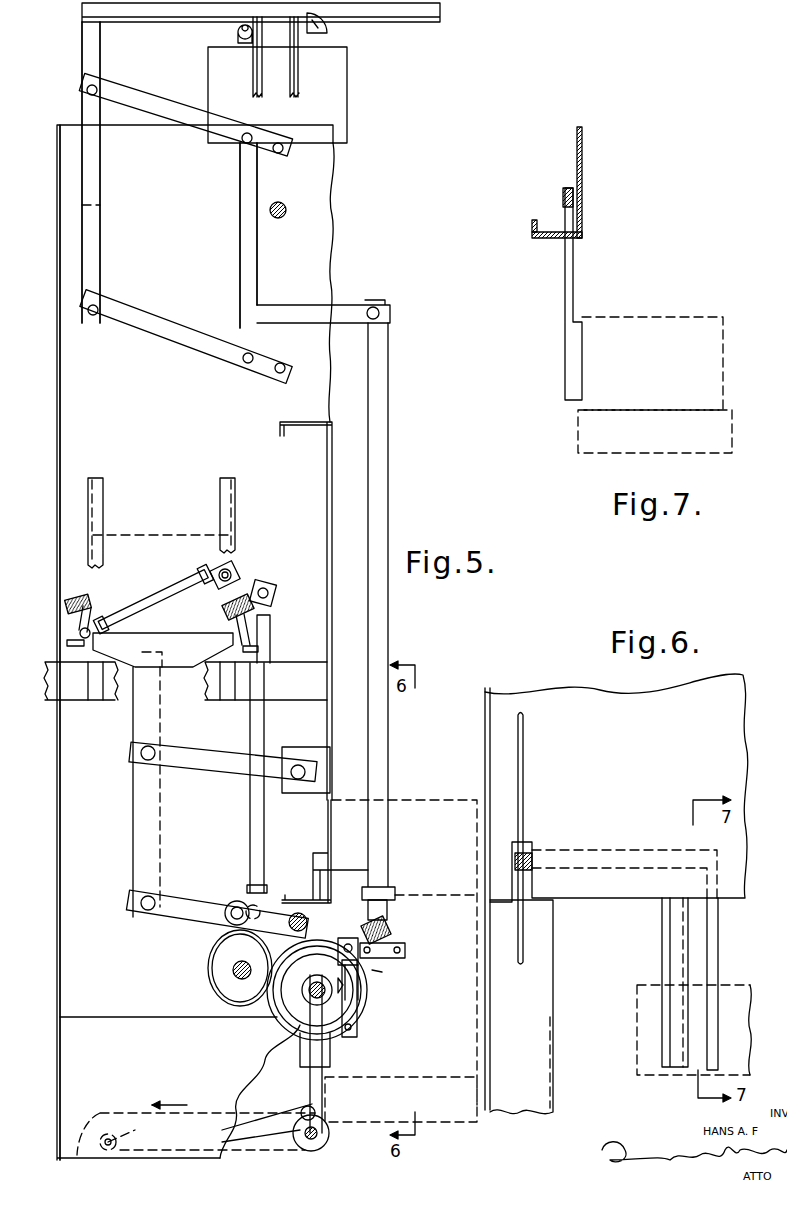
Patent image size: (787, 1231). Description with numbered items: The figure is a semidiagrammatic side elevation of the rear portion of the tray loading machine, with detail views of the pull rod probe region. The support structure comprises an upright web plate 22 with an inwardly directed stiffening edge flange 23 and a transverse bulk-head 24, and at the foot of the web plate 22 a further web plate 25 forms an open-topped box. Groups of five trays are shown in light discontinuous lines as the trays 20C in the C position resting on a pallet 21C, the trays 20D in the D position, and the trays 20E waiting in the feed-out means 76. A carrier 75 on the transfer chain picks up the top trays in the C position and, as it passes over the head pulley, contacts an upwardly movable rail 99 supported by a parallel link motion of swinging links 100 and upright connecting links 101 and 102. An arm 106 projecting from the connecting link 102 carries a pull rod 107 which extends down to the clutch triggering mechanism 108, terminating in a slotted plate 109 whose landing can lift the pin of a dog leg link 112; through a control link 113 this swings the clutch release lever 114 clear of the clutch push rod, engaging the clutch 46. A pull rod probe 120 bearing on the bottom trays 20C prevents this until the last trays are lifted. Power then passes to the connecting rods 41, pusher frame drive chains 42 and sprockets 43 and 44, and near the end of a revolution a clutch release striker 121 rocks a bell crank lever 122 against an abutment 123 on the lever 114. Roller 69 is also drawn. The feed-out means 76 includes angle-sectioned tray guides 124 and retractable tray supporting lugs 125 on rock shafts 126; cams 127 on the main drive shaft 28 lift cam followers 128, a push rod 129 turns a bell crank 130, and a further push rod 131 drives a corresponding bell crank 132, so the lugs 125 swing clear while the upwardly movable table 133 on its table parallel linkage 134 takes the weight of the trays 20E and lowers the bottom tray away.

In FIG. 5, the trays in the C position 20C is at (401, 961).
In FIG. 6, the trays in the C position 20C is at (637, 1043).
In FIG. 7, the trays in the C position 20C is at (652, 363).
In FIG. 5, the trays in the D position 20D is at (350, 95).
In FIG. 5, the trays in the E position 20E is at (158, 535).
In FIG. 7, the pallet in the C position 21C is at (655, 431).
In FIG. 5, the upright web plate 22 is at (176, 426).
In FIG. 6, the upright web plate 22 is at (490, 985).
In FIG. 5, the stiffening edge flange 23 is at (60, 927).
In FIG. 6, the stiffening edge flange 23 is at (525, 1042).
In FIG. 5, the transverse bulk-head 24 is at (330, 468).
In FIG. 6, the transverse bulk-head 24 is at (630, 797).
In FIG. 7, the transverse bulk-head 24 is at (582, 155).
In FIG. 5, the further web plate 25 is at (187, 1071).
In FIG. 6, the further web plate 25 is at (553, 1080).
In FIG. 5, the main drive shaft 28 is at (232, 975).
In FIG. 5, the connecting rod 41 is at (232, 1130).
In FIG. 5, the pusher frame drive chain 42 is at (282, 1152).
In FIG. 5, the sprocket 43 is at (90, 1135).
In FIG. 5, the sprocket 44 is at (320, 1148).
In FIG. 5, the clutch 46 is at (273, 1027).
In FIG. 5, the roller 69 is at (290, 210).
In FIG. 5, the carrier 75 is at (340, 37).
In FIG. 5, the feed-out means 76 is at (77, 557).
In FIG. 5, the upwardly movable rail 99 is at (188, 13).
In FIG. 5, the swinging link 100 is at (160, 113).
In FIG. 5, the upright connecting link 101 is at (95, 183).
In FIG. 5, the upright connecting link 102 is at (240, 243).
In FIG. 5, the arm 106 is at (345, 305).
In FIG. 5, the pull rod 107 is at (378, 412).
In FIG. 6, the pull rod 107 is at (525, 750).
In FIG. 5, the clutch triggering mechanism 108 is at (382, 972).
In FIG. 5, the slotted plate 109 is at (388, 905).
In FIG. 5, the dog leg link 112 is at (392, 940).
In FIG. 5, the control link 113 is at (400, 958).
In FIG. 5, the clutch release lever 114 is at (352, 1013).
In FIG. 5, the pull rod probe 120 is at (330, 880).
In FIG. 6, the pull rod probe 120 is at (718, 950).
In FIG. 7, the pull rod probe 120 is at (568, 270).
In FIG. 5, the clutch release striker 121 is at (103, 1150).
In FIG. 5, the bell crank lever 122 is at (321, 1090).
In FIG. 5, the abutment 123 is at (345, 975).
In FIG. 5, the tray guide 124 is at (96, 486).
In FIG. 5, the retractable tray supporting lug 125 is at (70, 644).
In FIG. 5, the rock shaft 126 is at (75, 598).
In FIG. 5, the feed-out means operating cam 127 is at (225, 945).
In FIG. 5, the cam follower 128 is at (265, 910).
In FIG. 5, the push rod 129 is at (255, 732).
In FIG. 5, the bell crank 130 is at (238, 580).
In FIG. 5, the further push rod 131 is at (165, 597).
In FIG. 5, the bell crank 132 is at (90, 620).
In FIG. 5, the upwardly movable table 133 is at (192, 662).
In FIG. 5, the table parallel linkage 134 is at (216, 766).